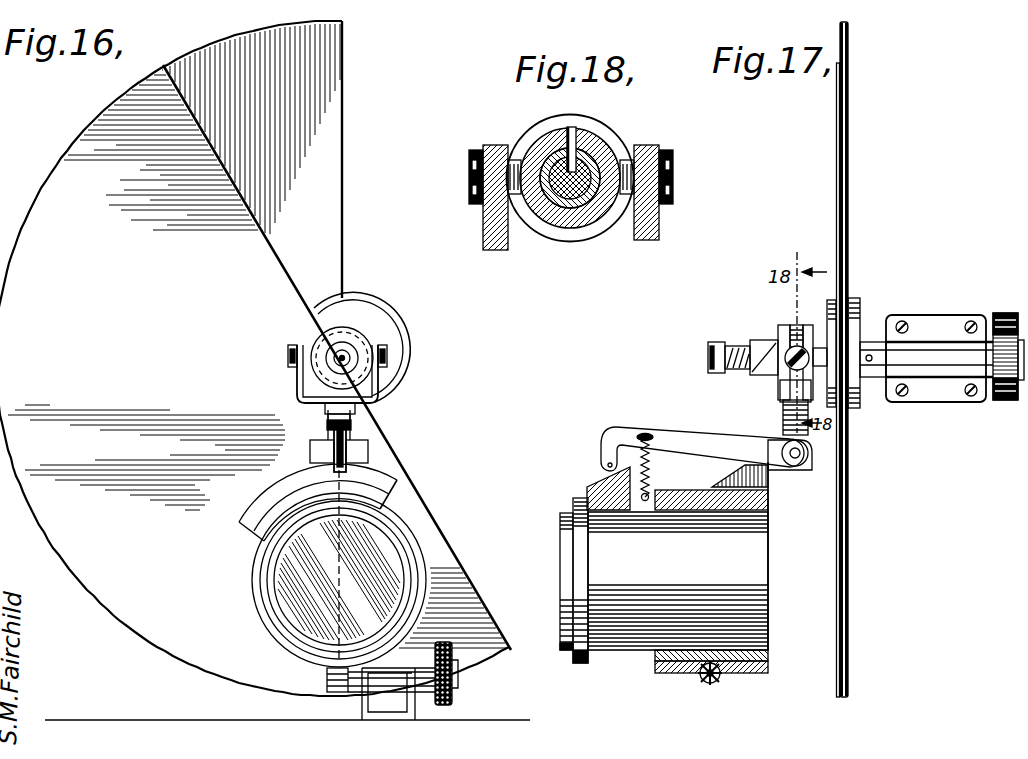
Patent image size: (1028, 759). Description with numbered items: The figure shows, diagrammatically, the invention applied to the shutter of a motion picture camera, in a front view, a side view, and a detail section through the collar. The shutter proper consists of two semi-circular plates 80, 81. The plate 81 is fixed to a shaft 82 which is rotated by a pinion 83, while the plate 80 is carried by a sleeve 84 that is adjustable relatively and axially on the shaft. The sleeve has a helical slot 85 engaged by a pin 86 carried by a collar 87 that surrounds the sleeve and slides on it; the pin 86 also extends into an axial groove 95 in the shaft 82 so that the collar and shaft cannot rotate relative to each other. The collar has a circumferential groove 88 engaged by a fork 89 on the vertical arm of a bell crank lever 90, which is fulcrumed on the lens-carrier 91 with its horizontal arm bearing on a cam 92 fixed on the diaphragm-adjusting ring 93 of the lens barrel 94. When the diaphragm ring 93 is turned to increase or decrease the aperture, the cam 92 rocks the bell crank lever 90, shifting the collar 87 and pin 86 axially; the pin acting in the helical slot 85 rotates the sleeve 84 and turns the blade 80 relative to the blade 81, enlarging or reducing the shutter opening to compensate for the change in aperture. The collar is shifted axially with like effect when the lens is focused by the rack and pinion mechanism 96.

In FIG. 16, the semi-circular plate 80 is at (254, 358).
In FIG. 17, the semi-circular plate 80 is at (836, 208).
In FIG. 16, the semi-circular plate 81 is at (337, 357).
In FIG. 17, the semi-circular plate 81 is at (849, 227).
In FIG. 18, the shaft 82 is at (564, 209).
In FIG. 17, the shaft 82 is at (917, 316).
In FIG. 17, the pinion 83 is at (1000, 313).
In FIG. 18, the sleeve 84 is at (592, 160).
In FIG. 17, the sleeve 84 is at (765, 340).
In FIG. 17, the helical slot 85 is at (760, 366).
In FIG. 18, the pin 86 is at (572, 128).
In FIG. 18, the collar 87 is at (537, 131).
In FIG. 17, the collar 87 is at (810, 328).
In FIG. 18, the circumferential groove 88 is at (557, 122).
In FIG. 17, the circumferential groove 88 is at (797, 328).
In FIG. 18, the fork 89 is at (483, 218).
In FIG. 17, the fork 89 is at (790, 398).
In FIG. 16, the bell crank lever 90 is at (345, 432).
In FIG. 17, the bell crank lever 90 is at (678, 438).
In FIG. 17, the lens-carrier 91 is at (769, 497).
In FIG. 16, the cam 92 is at (380, 470).
In FIG. 17, the cam 92 is at (603, 476).
In FIG. 16, the diaphragm-adjusting ring 93 is at (395, 527).
In FIG. 17, the diaphragm-adjusting ring 93 is at (575, 500).
In FIG. 16, the lens barrel 94 is at (410, 558).
In FIG. 17, the lens barrel 94 is at (678, 581).
In FIG. 17, the axial groove 95 is at (740, 345).
In FIG. 16, the rack and pinion mechanism 96 is at (325, 681).
In FIG. 17, the rack and pinion mechanism 96 is at (708, 688).